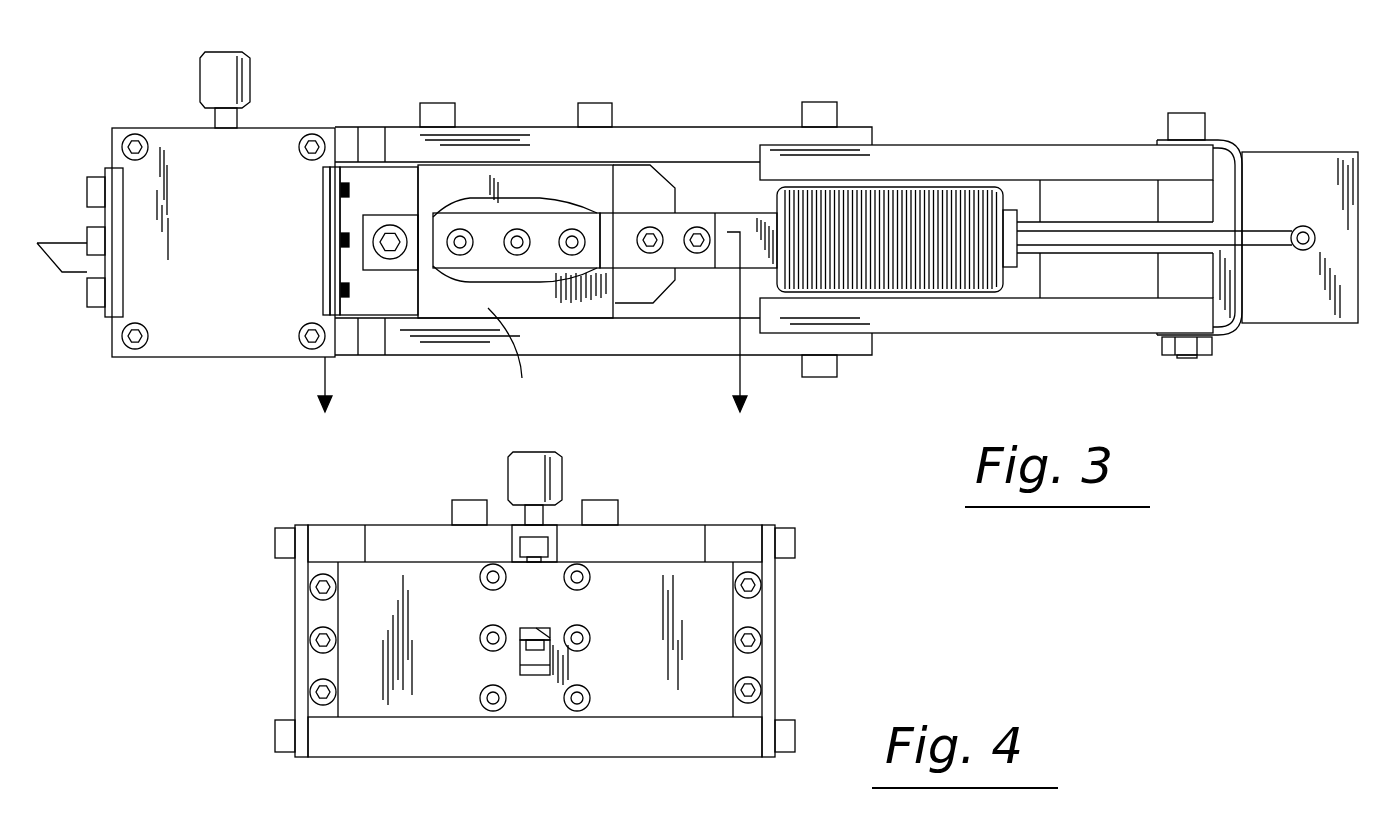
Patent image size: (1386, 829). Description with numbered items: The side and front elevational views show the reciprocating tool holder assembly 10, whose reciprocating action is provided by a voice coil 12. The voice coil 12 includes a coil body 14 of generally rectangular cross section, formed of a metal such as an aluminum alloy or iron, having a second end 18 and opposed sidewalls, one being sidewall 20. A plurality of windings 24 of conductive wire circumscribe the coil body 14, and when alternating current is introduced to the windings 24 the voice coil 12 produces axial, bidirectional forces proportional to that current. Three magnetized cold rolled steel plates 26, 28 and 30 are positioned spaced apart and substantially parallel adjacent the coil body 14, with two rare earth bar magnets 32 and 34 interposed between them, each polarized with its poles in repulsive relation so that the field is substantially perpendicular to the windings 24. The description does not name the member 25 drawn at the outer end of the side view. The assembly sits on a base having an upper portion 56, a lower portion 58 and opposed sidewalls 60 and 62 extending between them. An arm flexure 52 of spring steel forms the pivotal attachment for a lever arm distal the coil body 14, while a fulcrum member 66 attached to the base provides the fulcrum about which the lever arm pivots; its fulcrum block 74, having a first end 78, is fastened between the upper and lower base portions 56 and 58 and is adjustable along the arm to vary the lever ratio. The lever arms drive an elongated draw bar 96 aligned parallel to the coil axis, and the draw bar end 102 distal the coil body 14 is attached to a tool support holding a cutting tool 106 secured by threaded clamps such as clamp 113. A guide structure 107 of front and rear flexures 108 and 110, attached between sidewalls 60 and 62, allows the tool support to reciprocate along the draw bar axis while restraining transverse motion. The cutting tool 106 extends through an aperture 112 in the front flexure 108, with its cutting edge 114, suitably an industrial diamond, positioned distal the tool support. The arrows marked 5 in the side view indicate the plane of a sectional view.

In FIG. 3, the reciprocating tool holder assembly 10 is at (923, 73).
In FIG. 4, the reciprocating tool holder assembly 10 is at (290, 501).
In FIG. 3, the voice coil 12 is at (1007, 277).
In FIG. 3, the coil body 14 is at (728, 217).
In FIG. 3, the second end 18 is at (1018, 208).
In FIG. 3, the sidewall 20 is at (752, 258).
In FIG. 3, the windings 24 is at (915, 187).
In FIG. 3, the end mount block 25 is at (1268, 233).
In FIG. 3, the pole piece 26 is at (1035, 140).
In FIG. 3, the pole piece 28 is at (1182, 222).
In FIG. 3, the pole piece 30 is at (1123, 333).
In FIG. 3, the bar magnet 32 is at (1105, 190).
In FIG. 3, the bar magnet 34 is at (1127, 288).
In FIG. 3, the section line 5 is at (547, 339).
In FIG. 3, the arm flexure 52 is at (497, 223).
In FIG. 3, the upper base portion 56 is at (502, 125).
In FIG. 4, the upper base portion 56 is at (660, 522).
In FIG. 3, the lower base portion 58 is at (400, 357).
In FIG. 4, the lower base portion 58 is at (397, 757).
In FIG. 4, the base sidewall 60 is at (295, 610).
In FIG. 3, the base sidewall 62 is at (242, 358).
In FIG. 4, the base sidewall 62 is at (777, 625).
In FIG. 3, the fulcrum member 66 is at (572, 178).
In FIG. 3, the fulcrum block 74 is at (565, 305).
In FIG. 3, the first end 78 is at (526, 350).
In FIG. 3, the draw bar 96 is at (653, 307).
In FIG. 3, the draw bar end 102 is at (368, 236).
In FIG. 3, the cutting tool 106 is at (62, 273).
In FIG. 4, the cutting tool 106 is at (543, 660).
In FIG. 4, the guide structure 107 is at (768, 673).
In FIG. 3, the front flexure 108 is at (113, 278).
In FIG. 4, the front flexure 108 is at (352, 672).
In FIG. 3, the rear flexure 110 is at (345, 298).
In FIG. 4, the aperture 112 is at (518, 662).
In FIG. 3, the threaded clamp 113 is at (250, 70).
In FIG. 4, the threaded clamp 113 is at (560, 466).
In FIG. 3, the cutting edge 114 is at (43, 240).
In FIG. 4, the cutting edge 114 is at (540, 630).